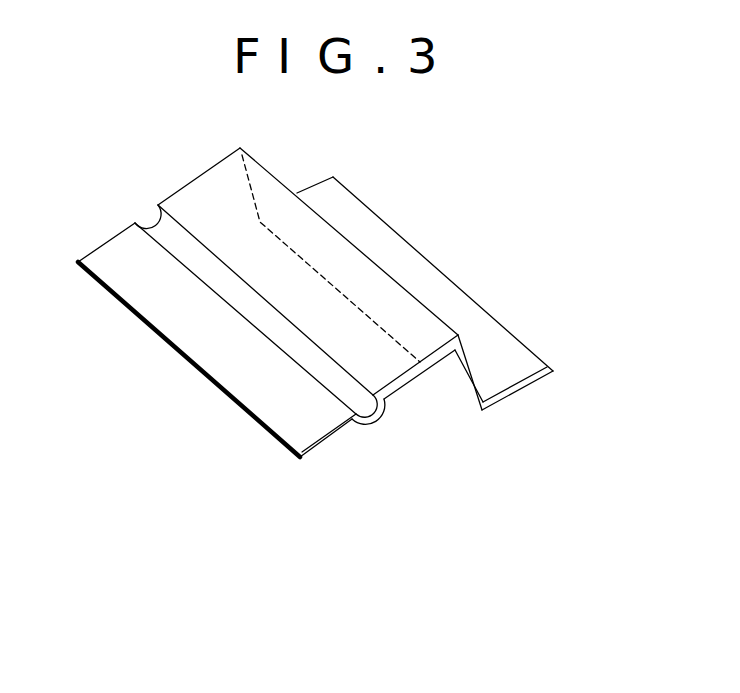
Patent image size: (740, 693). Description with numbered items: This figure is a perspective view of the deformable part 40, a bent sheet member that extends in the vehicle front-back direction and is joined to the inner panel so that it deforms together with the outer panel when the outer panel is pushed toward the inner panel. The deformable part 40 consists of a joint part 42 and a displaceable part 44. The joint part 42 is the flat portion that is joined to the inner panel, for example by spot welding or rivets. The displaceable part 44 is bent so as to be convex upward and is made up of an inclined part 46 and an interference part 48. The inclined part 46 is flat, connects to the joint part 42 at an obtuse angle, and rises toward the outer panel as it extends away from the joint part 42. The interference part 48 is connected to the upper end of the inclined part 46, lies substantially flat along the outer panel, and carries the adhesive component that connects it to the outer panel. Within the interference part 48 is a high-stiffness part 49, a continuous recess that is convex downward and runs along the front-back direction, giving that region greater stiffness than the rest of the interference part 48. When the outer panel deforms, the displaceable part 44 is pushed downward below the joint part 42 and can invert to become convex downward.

The deformable part 40 is at (315, 362).
The joint part 42 is at (520, 388).
The displaceable part 44 is at (280, 343).
The inclined part 46 is at (470, 377).
The interference part 48 is at (335, 432).
The high-stiffness part 49 is at (158, 233).